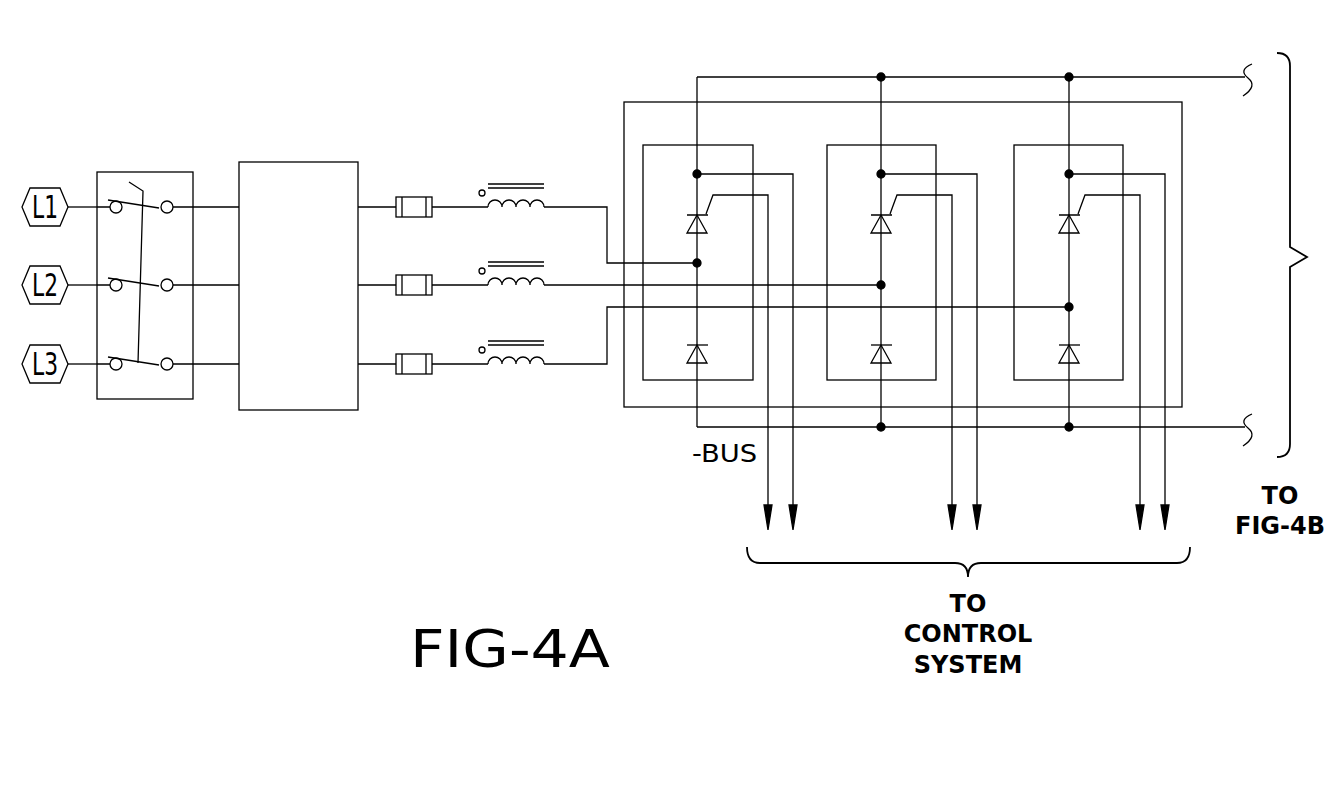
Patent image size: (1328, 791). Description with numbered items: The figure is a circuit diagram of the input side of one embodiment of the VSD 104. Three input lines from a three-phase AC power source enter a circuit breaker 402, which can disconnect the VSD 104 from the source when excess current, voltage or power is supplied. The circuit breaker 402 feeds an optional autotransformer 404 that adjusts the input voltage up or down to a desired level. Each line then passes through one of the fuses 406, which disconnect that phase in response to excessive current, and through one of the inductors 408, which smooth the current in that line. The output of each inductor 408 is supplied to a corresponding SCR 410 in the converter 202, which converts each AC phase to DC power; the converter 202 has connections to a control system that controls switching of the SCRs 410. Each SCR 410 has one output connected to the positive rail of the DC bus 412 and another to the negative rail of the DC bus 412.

The VSD 104 is at (618, 488).
The converter 202 is at (815, 146).
The circuit breaker 402 is at (145, 400).
The autotransformer 404 is at (298, 410).
The fuses 406 is at (413, 376).
The inductors 408 is at (518, 358).
The SCR 410 is at (1125, 162).
The DC bus 412 is at (925, 77).